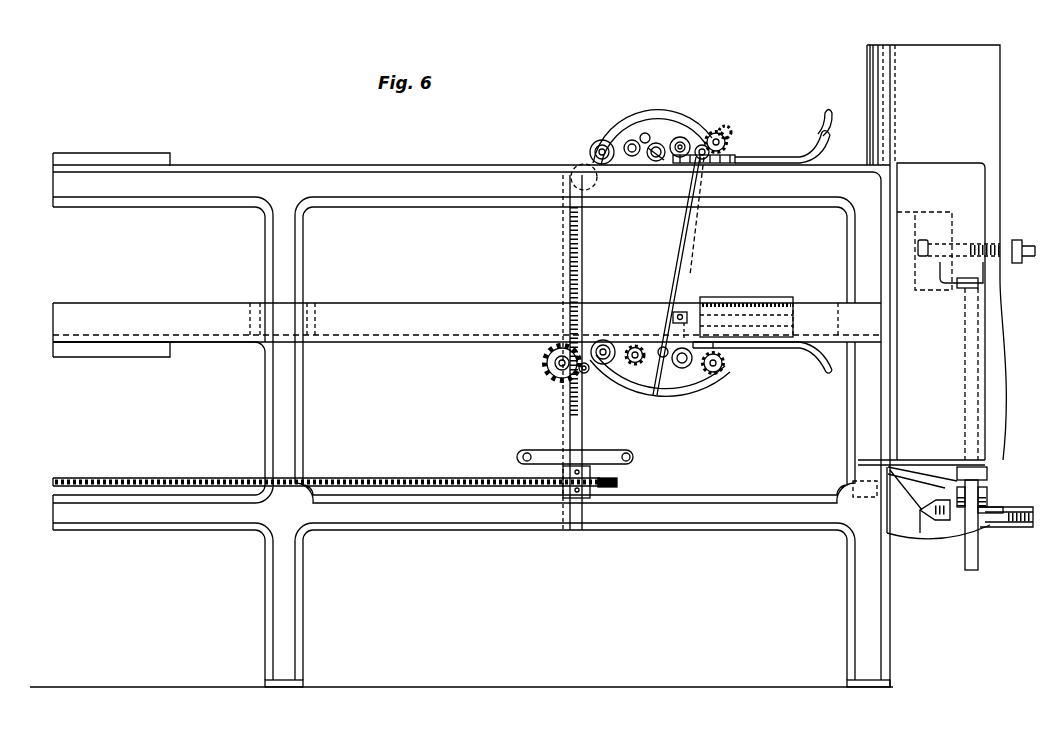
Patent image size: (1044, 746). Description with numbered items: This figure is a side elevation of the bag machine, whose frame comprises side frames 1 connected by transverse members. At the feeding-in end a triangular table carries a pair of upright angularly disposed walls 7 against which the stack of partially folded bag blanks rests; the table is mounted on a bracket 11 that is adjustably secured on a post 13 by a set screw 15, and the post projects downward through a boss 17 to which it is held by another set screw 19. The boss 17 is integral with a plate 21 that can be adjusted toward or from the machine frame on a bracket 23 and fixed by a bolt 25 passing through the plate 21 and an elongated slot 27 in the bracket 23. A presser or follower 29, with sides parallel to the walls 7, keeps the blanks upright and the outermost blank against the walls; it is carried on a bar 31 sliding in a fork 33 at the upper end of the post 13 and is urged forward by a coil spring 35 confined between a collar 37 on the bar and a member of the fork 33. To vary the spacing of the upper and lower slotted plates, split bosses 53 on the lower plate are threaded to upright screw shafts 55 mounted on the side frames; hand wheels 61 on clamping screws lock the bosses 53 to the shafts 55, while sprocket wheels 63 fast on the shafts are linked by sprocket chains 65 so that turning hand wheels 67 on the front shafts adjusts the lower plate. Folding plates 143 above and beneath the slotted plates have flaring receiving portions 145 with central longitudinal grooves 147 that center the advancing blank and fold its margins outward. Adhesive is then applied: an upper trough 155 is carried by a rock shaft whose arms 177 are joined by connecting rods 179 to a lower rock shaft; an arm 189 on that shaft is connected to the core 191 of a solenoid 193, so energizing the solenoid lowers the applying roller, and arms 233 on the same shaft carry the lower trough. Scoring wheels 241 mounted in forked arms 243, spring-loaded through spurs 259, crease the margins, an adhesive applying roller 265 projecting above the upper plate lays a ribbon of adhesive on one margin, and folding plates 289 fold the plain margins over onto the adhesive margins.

The side frames 1 is at (285, 256).
The folding plates 289 is at (102, 158).
The upright walls 7 is at (927, 170).
The bracket 11 is at (943, 468).
The post 13 is at (962, 433).
The set screw 15 is at (988, 470).
The boss 17 is at (992, 489).
The set screw 19 is at (1013, 503).
The plate 21 is at (962, 510).
The bracket 23 is at (928, 535).
The bolt 25 is at (1007, 527).
The elongated slot 27 is at (987, 528).
The presser or follower 29 is at (920, 212).
The bar 31 is at (928, 243).
The fork 33 is at (1000, 280).
The coil spring 35 is at (1005, 241).
The collar 37 is at (983, 240).
The split bosses 53 is at (588, 372).
The upright shafts 55 is at (583, 436).
The hand wheels 61 is at (543, 363).
The sprocket wheels 63 is at (617, 487).
The sprocket chains 65 is at (372, 480).
The hand wheels 67 is at (633, 457).
The folding plates 143 is at (757, 157).
The receiving portions 145 is at (820, 145).
The central longitudinal grooves 147 is at (823, 135).
The trough 155 is at (665, 147).
The arms 177 is at (698, 133).
The connecting rods 179 is at (695, 224).
The arm 189 is at (675, 325).
The core 191 is at (680, 312).
The solenoid 193 is at (730, 296).
The arms 233 is at (670, 370).
The scoring wheels 241 is at (590, 148).
The arms 243 is at (630, 126).
The spurs 259 is at (730, 128).
The adhesive applying roller 265 is at (596, 186).